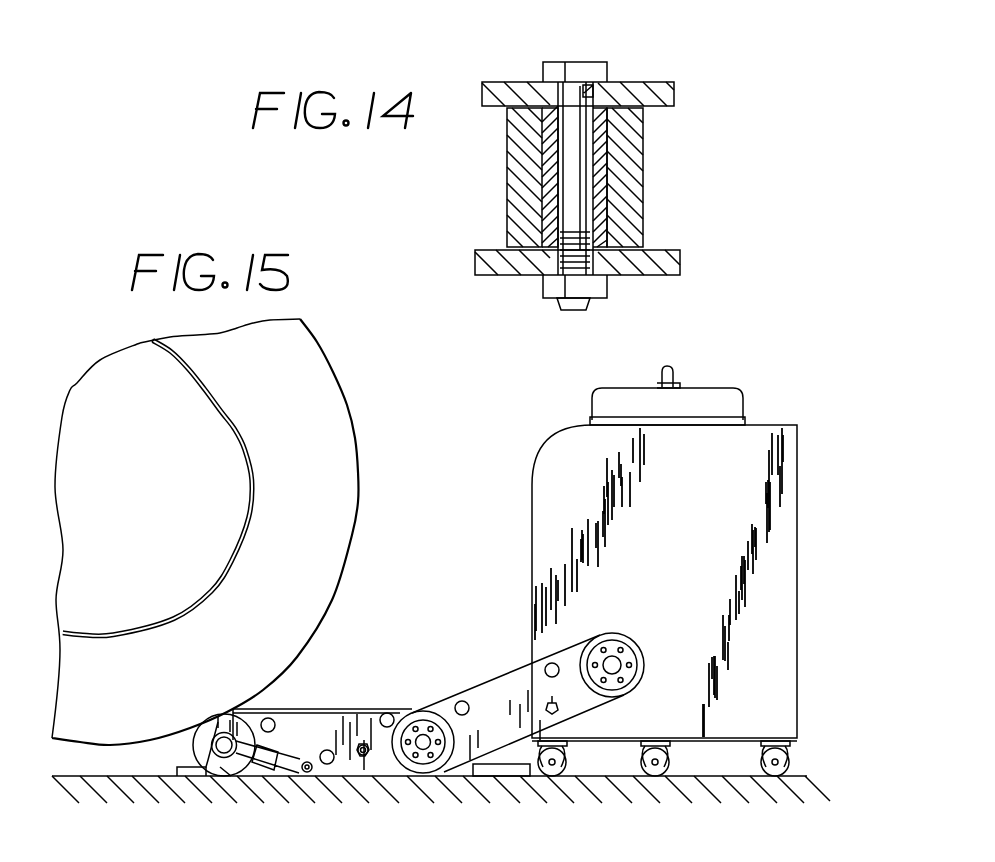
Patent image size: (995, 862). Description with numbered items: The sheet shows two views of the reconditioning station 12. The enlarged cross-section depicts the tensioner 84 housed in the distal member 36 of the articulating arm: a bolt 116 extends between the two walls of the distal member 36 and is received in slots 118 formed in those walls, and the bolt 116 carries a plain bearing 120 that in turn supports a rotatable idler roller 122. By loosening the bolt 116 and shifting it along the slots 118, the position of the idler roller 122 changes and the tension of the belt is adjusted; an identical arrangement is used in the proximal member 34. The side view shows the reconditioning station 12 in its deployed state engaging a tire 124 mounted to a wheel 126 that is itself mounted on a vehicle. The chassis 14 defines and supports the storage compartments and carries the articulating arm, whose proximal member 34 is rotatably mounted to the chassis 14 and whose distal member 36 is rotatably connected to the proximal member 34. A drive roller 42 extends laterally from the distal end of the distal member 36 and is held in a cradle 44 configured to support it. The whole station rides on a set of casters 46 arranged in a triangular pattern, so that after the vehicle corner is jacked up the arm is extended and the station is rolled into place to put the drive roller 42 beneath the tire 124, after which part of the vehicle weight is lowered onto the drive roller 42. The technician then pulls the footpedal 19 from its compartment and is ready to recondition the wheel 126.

In FIG. 15, the reconditioning station 12 is at (500, 500).
In FIG. 15, the chassis 14 is at (798, 584).
In FIG. 15, the footpedal 19 is at (498, 768).
In FIG. 15, the proximal member 34 is at (498, 678).
In FIG. 14, the distal member 36 is at (663, 98).
In FIG. 15, the distal member 36 is at (340, 709).
In FIG. 15, the drive roller 42 is at (243, 725).
In FIG. 15, the cradle 44 is at (222, 767).
In FIG. 15, the casters 46 is at (790, 764).
In FIG. 14, the tensioner 84 is at (679, 81).
In FIG. 14, the bolt 116 is at (560, 62).
In FIG. 15, the bolt 116 is at (369, 757).
In FIG. 14, the slots 118 is at (589, 82).
In FIG. 15, the slots 118 is at (367, 746).
In FIG. 14, the plain bearing 120 is at (550, 150).
In FIG. 14, the idler roller 122 is at (520, 197).
In FIG. 15, the tire 124 is at (347, 520).
In FIG. 15, the wheel 126 is at (218, 442).